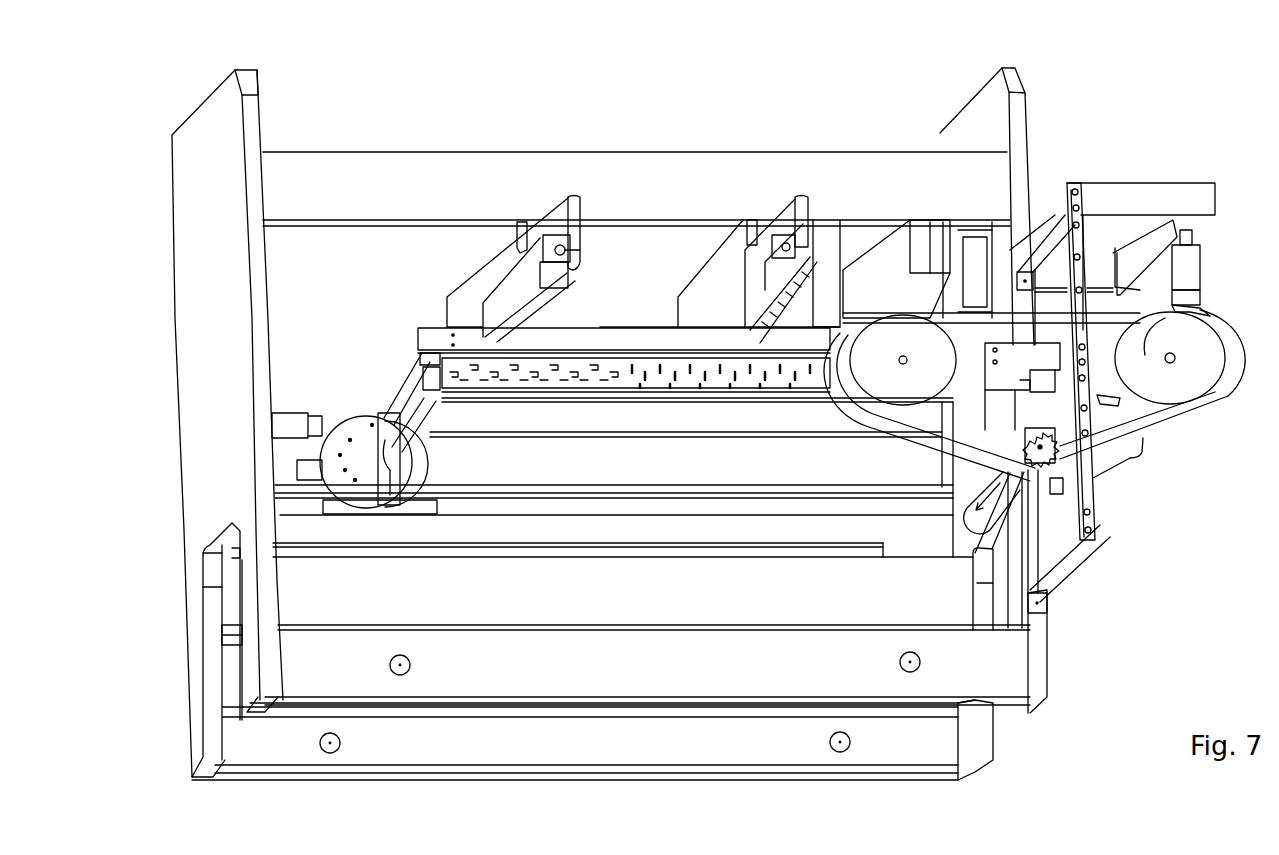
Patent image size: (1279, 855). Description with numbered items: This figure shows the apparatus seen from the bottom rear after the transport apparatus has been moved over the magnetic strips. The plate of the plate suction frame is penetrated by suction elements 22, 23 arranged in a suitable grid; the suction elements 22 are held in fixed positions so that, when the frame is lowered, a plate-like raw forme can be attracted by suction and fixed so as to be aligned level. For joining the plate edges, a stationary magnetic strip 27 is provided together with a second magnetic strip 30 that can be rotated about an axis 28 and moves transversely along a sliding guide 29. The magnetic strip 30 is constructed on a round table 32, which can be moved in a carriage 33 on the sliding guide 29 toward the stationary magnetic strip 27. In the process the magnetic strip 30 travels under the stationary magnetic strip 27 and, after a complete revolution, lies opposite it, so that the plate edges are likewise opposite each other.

The suction elements 22 is at (685, 430).
The suction elements 23 is at (593, 430).
The stationary magnetic strip 27 is at (800, 430).
The axis 28 is at (367, 493).
The sliding guide 29 is at (470, 527).
The magnetic strip 30 is at (403, 398).
The round table 32 is at (343, 472).
The carriage 33 is at (397, 502).